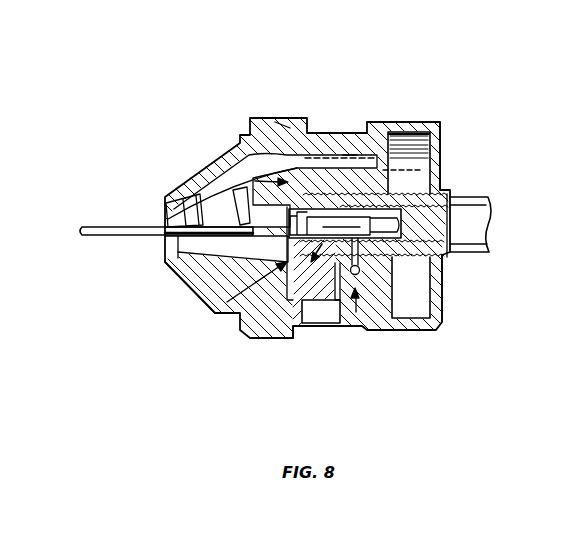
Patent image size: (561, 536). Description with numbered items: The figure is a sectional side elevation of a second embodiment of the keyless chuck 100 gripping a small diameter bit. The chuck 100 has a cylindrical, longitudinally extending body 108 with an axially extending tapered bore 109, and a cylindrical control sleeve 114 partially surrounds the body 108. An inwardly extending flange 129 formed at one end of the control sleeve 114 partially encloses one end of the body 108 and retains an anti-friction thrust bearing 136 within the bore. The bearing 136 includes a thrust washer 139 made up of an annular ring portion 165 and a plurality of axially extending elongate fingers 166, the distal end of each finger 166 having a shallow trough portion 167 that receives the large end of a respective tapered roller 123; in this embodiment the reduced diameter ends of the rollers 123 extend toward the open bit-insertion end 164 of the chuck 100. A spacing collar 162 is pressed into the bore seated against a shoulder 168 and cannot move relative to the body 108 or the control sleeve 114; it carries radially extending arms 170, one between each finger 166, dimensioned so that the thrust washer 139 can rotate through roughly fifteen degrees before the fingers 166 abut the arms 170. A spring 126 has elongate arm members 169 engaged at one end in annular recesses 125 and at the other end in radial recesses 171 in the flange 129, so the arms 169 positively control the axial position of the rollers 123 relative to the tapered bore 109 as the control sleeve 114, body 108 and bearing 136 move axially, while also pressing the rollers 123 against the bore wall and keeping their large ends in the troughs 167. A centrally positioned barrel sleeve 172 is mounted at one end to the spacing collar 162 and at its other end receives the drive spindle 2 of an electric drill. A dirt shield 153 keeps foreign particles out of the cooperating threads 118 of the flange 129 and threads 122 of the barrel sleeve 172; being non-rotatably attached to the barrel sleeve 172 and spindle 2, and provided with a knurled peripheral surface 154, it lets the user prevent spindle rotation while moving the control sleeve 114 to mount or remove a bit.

The keyless chuck 100 is at (372, 89).
The cylindrical body 108 is at (241, 122).
The elongate fingers 166 is at (281, 124).
The spring 126 is at (318, 153).
The control sleeve 114 is at (342, 133).
The spring arm members 169 is at (350, 152).
The inwardly extending flange 129 is at (402, 155).
The dirt shield 153 is at (418, 122).
The radial recesses 171 is at (383, 165).
The threads of the barrel sleeve 122 is at (422, 192).
The drive spindle 2 is at (473, 200).
The threads of the flange 118 is at (458, 224).
The knurled peripheral surface 154 is at (443, 290).
The anti-friction thrust bearing 136 is at (356, 298).
The annular ring portion 165 is at (353, 275).
The radial arms 170 is at (334, 327).
The barrel sleeve 172 is at (311, 305).
The shoulder 168 is at (300, 338).
The spacing collar 162 is at (222, 300).
The annular recesses 125 is at (179, 272).
The bit-insertion end 164 is at (163, 247).
The trough portion 167 is at (250, 196).
The thrust washer 139 is at (240, 192).
The tapered rollers 123 is at (290, 211).
The tapered bore 109 is at (265, 266).